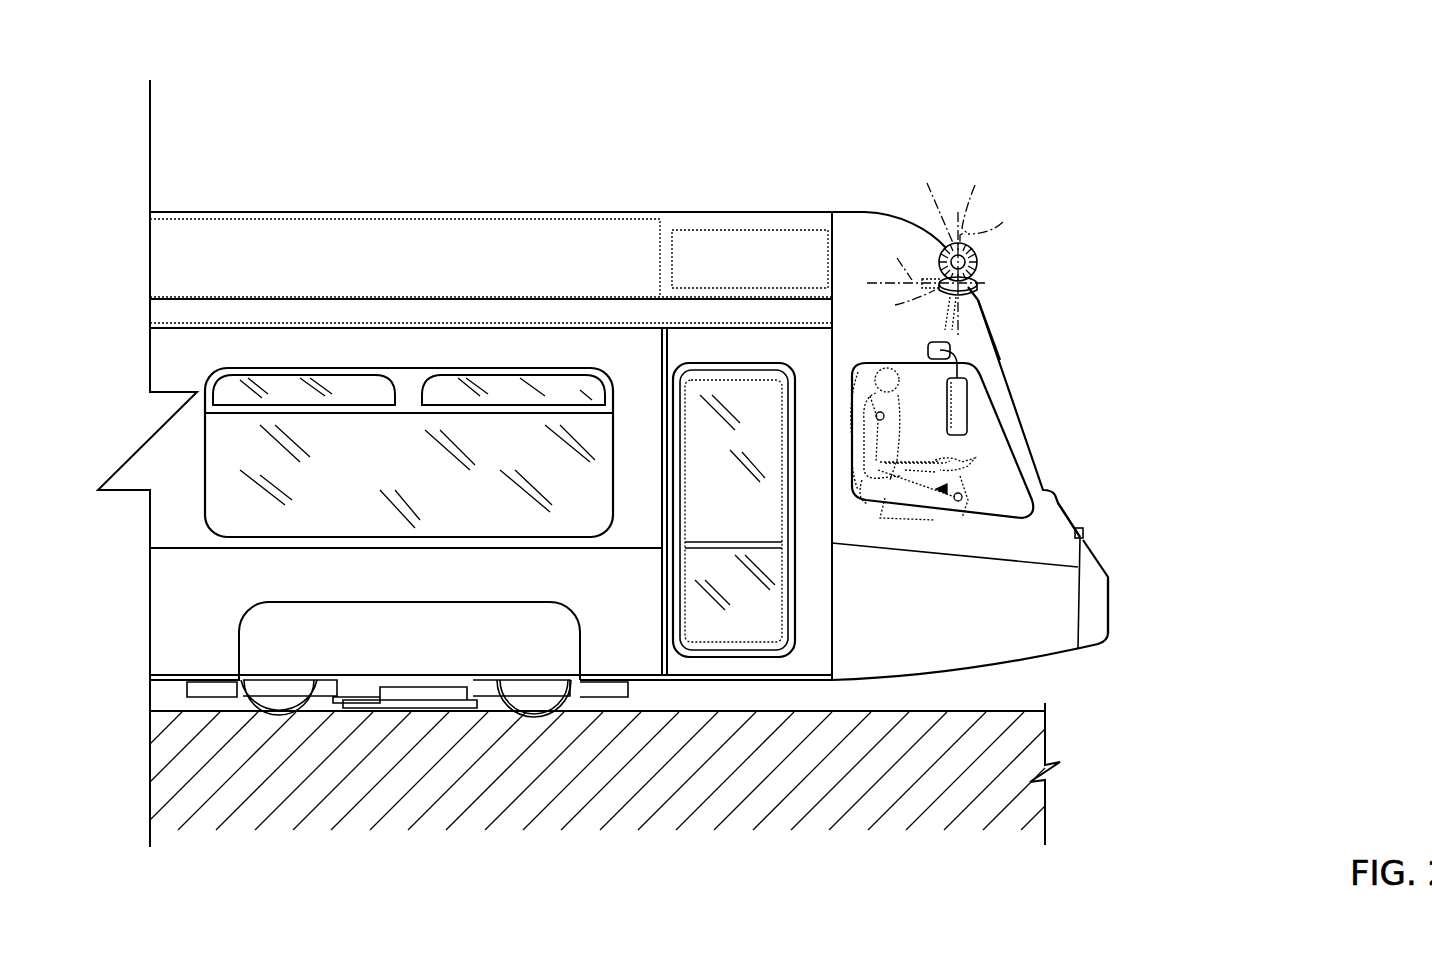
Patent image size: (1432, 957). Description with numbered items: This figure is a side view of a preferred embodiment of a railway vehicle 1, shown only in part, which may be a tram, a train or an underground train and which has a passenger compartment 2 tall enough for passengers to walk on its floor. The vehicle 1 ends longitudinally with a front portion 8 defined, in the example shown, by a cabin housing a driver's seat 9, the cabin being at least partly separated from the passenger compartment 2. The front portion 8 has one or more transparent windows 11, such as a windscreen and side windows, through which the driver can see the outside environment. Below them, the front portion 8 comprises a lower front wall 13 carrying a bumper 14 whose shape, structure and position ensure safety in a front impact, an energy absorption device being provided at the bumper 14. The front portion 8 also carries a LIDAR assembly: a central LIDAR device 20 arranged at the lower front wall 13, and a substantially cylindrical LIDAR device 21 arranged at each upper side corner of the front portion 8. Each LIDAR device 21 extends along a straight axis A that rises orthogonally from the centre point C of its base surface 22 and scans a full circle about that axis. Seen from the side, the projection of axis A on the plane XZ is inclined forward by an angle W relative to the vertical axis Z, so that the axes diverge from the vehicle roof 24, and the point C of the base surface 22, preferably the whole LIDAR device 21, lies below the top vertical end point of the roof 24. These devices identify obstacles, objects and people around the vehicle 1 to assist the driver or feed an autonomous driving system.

The vehicle 1 is at (1276, 116).
The passenger compartment 2 is at (355, 455).
The front portion 8 is at (997, 383).
The driver's seat 9 is at (947, 488).
The transparent windows 11 is at (997, 455).
The lower front wall 13 is at (1047, 535).
The bumper 14 is at (1106, 603).
The central LIDAR device 20 is at (1083, 540).
The LIDAR device 21 is at (976, 268).
The base surface 22 is at (993, 336).
The vehicle roof 24 is at (776, 212).